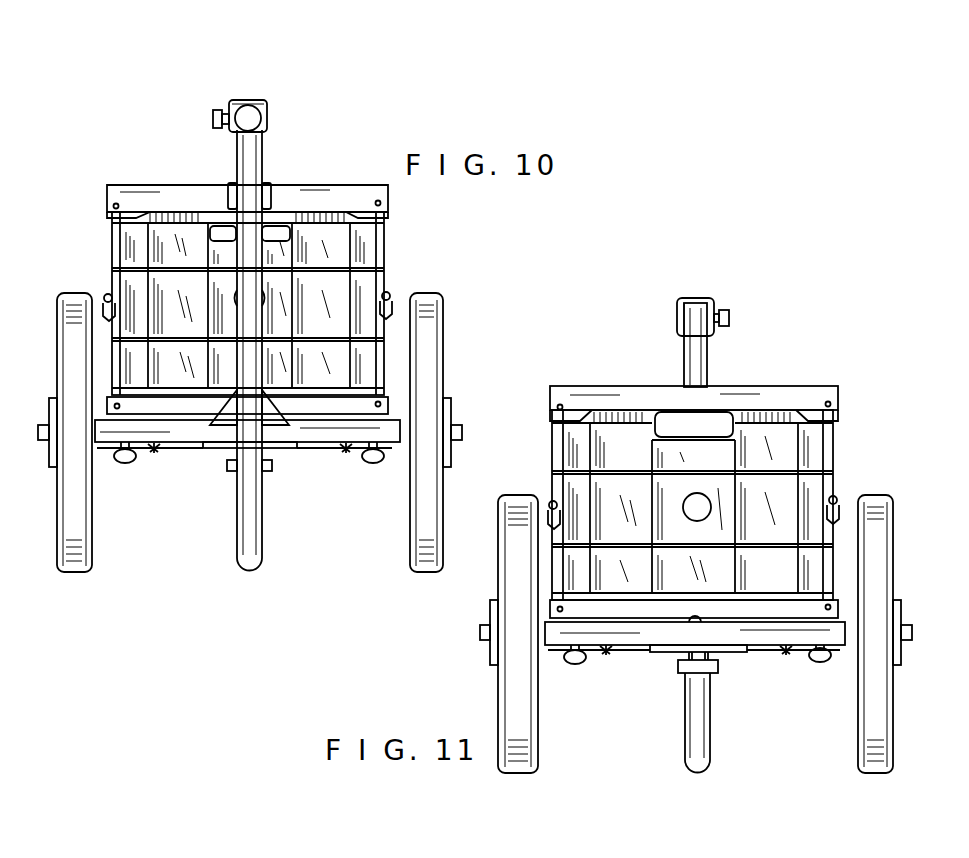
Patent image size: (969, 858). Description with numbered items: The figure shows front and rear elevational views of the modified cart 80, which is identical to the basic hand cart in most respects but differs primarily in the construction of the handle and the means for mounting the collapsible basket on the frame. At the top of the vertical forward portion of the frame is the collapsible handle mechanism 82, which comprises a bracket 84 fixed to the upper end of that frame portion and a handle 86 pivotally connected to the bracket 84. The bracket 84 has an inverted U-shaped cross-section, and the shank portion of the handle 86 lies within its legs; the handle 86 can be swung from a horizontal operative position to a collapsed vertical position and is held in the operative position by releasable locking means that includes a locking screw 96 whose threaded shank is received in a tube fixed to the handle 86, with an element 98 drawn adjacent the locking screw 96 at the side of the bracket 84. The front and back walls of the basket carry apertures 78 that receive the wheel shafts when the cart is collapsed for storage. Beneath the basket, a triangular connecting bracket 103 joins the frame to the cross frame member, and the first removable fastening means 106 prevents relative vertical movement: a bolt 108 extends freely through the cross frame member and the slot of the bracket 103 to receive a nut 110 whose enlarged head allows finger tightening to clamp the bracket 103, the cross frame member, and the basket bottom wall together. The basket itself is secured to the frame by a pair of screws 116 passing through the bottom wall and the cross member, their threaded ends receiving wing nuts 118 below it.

In FIG. 10, the apertures 78 is at (262, 300).
In FIG. 11, the apertures 78 is at (690, 495).
In FIG. 10, the modified cart 80 is at (348, 137).
In FIG. 11, the modified cart 80 is at (811, 337).
In FIG. 10, the collapsible handle mechanism 82 is at (272, 105).
In FIG. 11, the collapsible handle mechanism 82 is at (713, 292).
In FIG. 10, the bracket 84 is at (244, 99).
In FIG. 11, the bracket 84 is at (680, 302).
In FIG. 10, the handle 86 is at (255, 119).
In FIG. 10, the locking screw 96 is at (222, 104).
In FIG. 11, the locking screw 96 is at (717, 306).
In FIG. 10, the clamp knob 98 is at (212, 118).
In FIG. 11, the clamp knob 98 is at (730, 318).
In FIG. 10, the connecting bracket 103 is at (282, 447).
In FIG. 11, the connecting bracket 103 is at (745, 652).
In FIG. 11, the first removable fastening means 106 is at (720, 692).
In FIG. 11, the bolt 108 is at (692, 626).
In FIG. 10, the nut 110 is at (270, 472).
In FIG. 11, the nut 110 is at (680, 667).
In FIG. 10, the screws 116 is at (156, 454).
In FIG. 11, the screws 116 is at (606, 656).
In FIG. 10, the wing nuts 118 is at (162, 449).
In FIG. 11, the wing nuts 118 is at (782, 648).